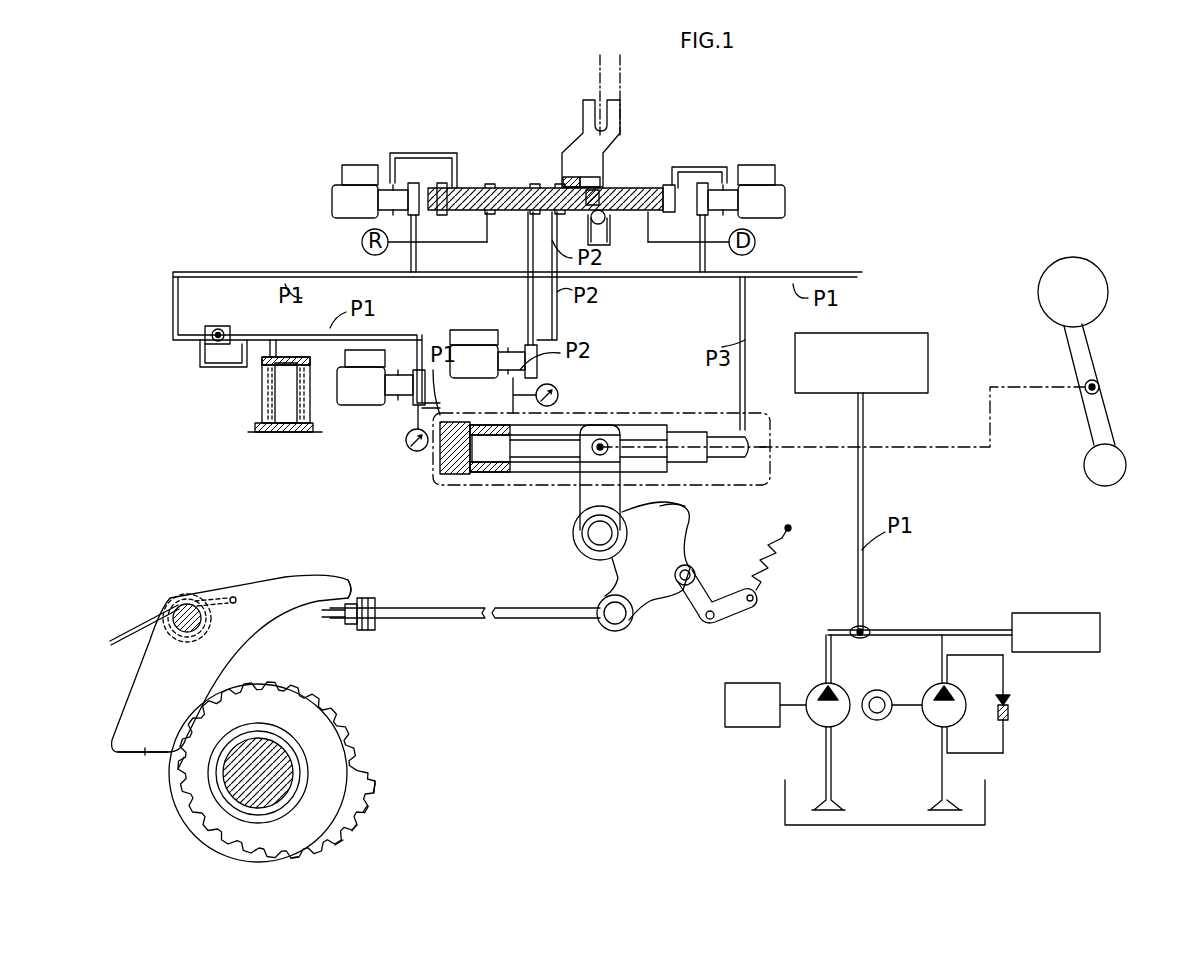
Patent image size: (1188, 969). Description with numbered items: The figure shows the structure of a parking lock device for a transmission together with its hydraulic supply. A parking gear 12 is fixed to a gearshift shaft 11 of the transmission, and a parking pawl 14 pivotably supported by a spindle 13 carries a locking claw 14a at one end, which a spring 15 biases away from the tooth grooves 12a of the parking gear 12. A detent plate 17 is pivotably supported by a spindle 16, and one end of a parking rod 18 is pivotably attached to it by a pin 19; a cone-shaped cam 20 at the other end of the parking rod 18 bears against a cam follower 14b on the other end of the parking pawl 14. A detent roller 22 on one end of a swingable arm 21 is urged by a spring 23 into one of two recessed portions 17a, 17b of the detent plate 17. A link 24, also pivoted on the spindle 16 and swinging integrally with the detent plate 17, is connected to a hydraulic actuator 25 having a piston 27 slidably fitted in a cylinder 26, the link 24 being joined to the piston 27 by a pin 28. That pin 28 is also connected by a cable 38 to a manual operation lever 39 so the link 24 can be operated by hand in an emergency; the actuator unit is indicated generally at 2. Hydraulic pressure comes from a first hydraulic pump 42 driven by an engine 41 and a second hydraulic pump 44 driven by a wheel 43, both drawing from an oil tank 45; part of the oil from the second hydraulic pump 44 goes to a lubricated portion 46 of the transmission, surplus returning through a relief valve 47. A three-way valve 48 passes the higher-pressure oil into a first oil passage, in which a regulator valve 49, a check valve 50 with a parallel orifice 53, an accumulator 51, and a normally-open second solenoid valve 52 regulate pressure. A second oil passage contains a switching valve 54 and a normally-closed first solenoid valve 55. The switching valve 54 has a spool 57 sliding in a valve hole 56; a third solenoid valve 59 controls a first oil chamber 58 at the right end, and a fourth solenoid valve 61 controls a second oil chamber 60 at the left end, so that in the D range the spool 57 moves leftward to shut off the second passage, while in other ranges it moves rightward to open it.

The hydraulic actuator unit 2 is at (430, 480).
The gearshift shaft 11 is at (280, 762).
The parking gear 12 is at (362, 752).
The tooth grooves 12a is at (352, 702).
The spindle 13 is at (190, 605).
The parking pawl 14 is at (262, 580).
The locking claw 14a is at (143, 758).
The cam follower 14b is at (350, 585).
The spring 15 is at (130, 628).
The spindle 16 is at (592, 537).
The detent plate 17 is at (648, 604).
The recessed portion 17a is at (675, 578).
The recessed portion 17b is at (700, 538).
The parking rod 18 is at (460, 610).
The pin 19 is at (613, 630).
The cone-shaped cam 20 is at (362, 632).
The swingable arm 21 is at (698, 612).
The detent roller 22 is at (700, 570).
The spring 23 is at (775, 565).
The link 24 is at (590, 455).
The hydraulic actuator 25 is at (635, 412).
The cylinder 26 is at (573, 418).
The piston 27 is at (525, 478).
The pin 28 is at (606, 438).
The cable 38 is at (955, 452).
The manual operation lever 39 is at (1102, 285).
The engine 41 is at (762, 714).
The first hydraulic pump 42 is at (818, 722).
The wheel 43 is at (875, 712).
The second hydraulic pump 44 is at (930, 722).
The oil tank 45 is at (985, 803).
The lubricated portion 46 is at (1066, 642).
The relief valve 47 is at (1012, 698).
The three-way valve 48 is at (868, 626).
The regulator valve 49 is at (870, 371).
The check valve 50 is at (216, 330).
The accumulator 51 is at (262, 395).
The second solenoid valve 52 is at (386, 412).
The orifice 53 is at (225, 365).
The switching valve 54 is at (553, 165).
The first solenoid valve 55 is at (450, 340).
The valve hole 56 is at (505, 188).
The spool 57 is at (628, 192).
The first oil chamber 58 is at (675, 185).
The third solenoid valve 59 is at (785, 165).
The second oil chamber 60 is at (450, 188).
The fourth solenoid valve 61 is at (340, 170).